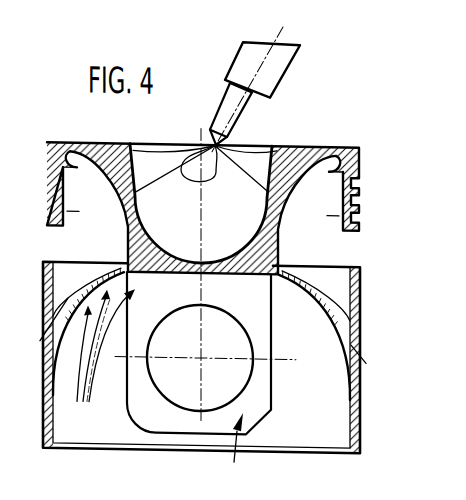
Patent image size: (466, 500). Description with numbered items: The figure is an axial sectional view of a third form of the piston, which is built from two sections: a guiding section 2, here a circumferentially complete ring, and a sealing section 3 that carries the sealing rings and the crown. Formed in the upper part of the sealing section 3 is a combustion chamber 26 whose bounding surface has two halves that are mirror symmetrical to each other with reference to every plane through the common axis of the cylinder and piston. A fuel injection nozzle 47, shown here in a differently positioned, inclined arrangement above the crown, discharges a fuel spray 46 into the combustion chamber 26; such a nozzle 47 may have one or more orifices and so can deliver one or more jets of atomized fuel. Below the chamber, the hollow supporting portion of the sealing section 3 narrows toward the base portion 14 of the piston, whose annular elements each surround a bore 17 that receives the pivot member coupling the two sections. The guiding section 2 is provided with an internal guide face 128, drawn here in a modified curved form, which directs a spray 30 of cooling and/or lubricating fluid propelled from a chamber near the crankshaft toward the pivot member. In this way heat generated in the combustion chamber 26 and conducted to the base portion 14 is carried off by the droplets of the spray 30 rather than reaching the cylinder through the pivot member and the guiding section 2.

The guiding section 2 is at (300, 436).
The sealing section 3 is at (305, 208).
The base portion 14 is at (228, 451).
The bore 17 is at (183, 405).
The combustion chamber 26 is at (181, 226).
The spray 30 is at (91, 376).
The fuel spray 46 is at (256, 159).
The nozzle 47 is at (283, 60).
The guide face 128 is at (301, 298).